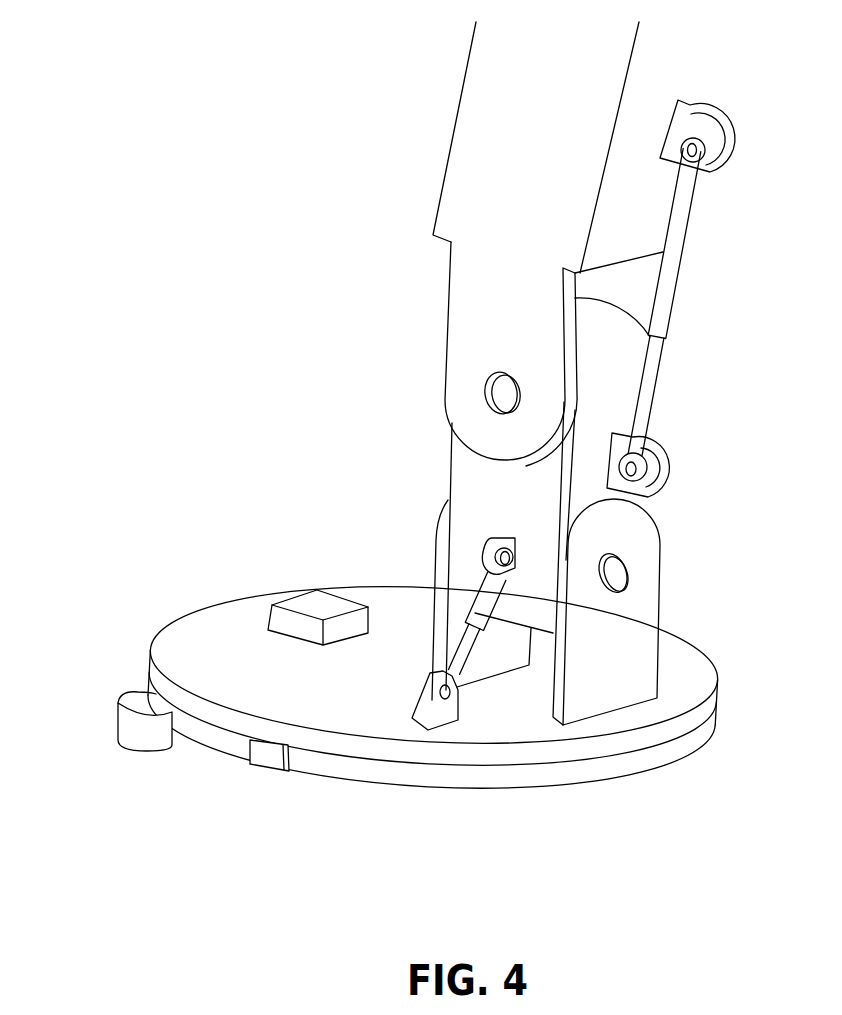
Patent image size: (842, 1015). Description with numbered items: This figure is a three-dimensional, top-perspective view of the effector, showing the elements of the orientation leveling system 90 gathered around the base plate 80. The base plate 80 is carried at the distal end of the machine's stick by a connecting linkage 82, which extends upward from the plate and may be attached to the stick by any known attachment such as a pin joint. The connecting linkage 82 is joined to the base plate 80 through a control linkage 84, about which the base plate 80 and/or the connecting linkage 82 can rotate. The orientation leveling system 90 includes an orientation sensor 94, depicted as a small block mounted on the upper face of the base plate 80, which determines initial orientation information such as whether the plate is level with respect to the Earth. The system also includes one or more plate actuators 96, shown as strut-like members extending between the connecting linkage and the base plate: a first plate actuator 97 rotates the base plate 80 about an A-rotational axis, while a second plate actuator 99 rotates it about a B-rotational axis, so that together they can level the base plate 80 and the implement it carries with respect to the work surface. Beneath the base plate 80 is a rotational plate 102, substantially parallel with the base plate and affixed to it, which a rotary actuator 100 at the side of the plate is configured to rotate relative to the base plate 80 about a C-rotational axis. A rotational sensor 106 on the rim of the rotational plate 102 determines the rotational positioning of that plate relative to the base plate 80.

The base plate 80 is at (685, 687).
The connecting linkage 82 is at (483, 177).
The control linkage 84 is at (630, 643).
The orientation leveling system 90 is at (343, 477).
The orientation sensor 94 is at (315, 605).
The plate actuators 96 is at (673, 302).
The first plate actuator 97 is at (653, 397).
The second plate actuator 99 is at (450, 653).
The rotary actuator 100 is at (110, 712).
The rotational plate 102 is at (633, 777).
The rotational sensor 106 is at (258, 758).